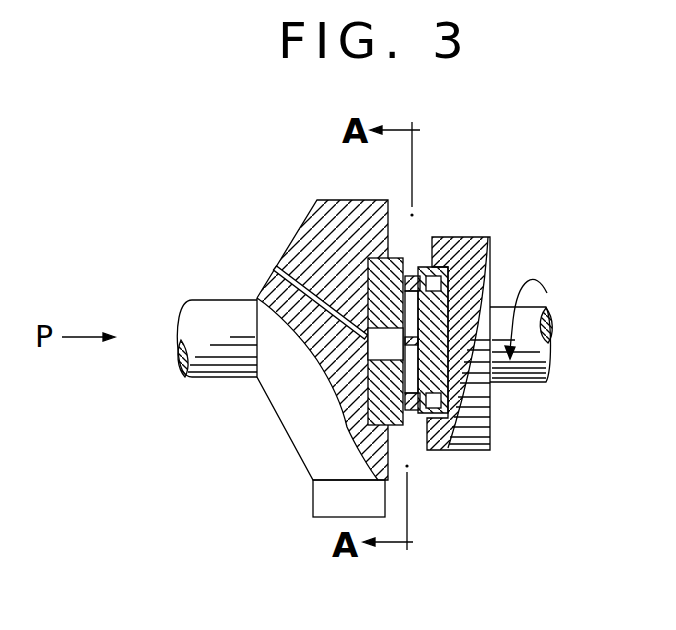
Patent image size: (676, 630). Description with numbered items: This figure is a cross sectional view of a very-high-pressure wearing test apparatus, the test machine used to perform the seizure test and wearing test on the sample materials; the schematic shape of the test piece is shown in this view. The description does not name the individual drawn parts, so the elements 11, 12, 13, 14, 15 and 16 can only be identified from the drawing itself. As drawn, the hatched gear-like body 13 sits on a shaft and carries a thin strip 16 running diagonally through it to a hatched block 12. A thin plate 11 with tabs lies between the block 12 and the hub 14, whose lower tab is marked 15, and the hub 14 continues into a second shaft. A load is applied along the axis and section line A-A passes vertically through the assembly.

The retaining plate 11 is at (412, 276).
The bushing 12 is at (398, 258).
The gear body 13 is at (303, 223).
The hub 14 is at (493, 253).
The lower tab 15 is at (417, 412).
The pin 16 is at (275, 268).